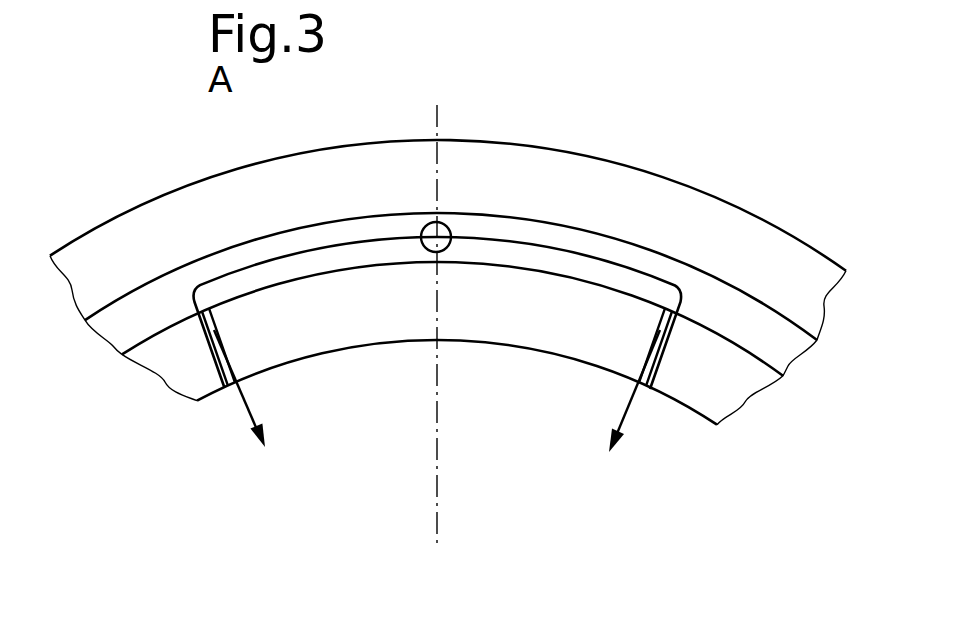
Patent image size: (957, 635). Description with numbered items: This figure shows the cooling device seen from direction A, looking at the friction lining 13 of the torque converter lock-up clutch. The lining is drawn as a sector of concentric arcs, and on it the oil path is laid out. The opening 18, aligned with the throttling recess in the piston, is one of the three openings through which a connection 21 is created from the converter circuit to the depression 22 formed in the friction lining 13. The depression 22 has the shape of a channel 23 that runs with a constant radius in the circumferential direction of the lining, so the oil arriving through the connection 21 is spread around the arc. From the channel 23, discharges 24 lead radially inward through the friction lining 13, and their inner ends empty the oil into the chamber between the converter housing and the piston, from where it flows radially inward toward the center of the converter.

The friction lining 13 is at (700, 222).
The opening 18 is at (445, 247).
The connection 21 is at (452, 216).
The depression 22 is at (728, 330).
The channel 23 is at (763, 333).
The discharges 24 is at (222, 352).